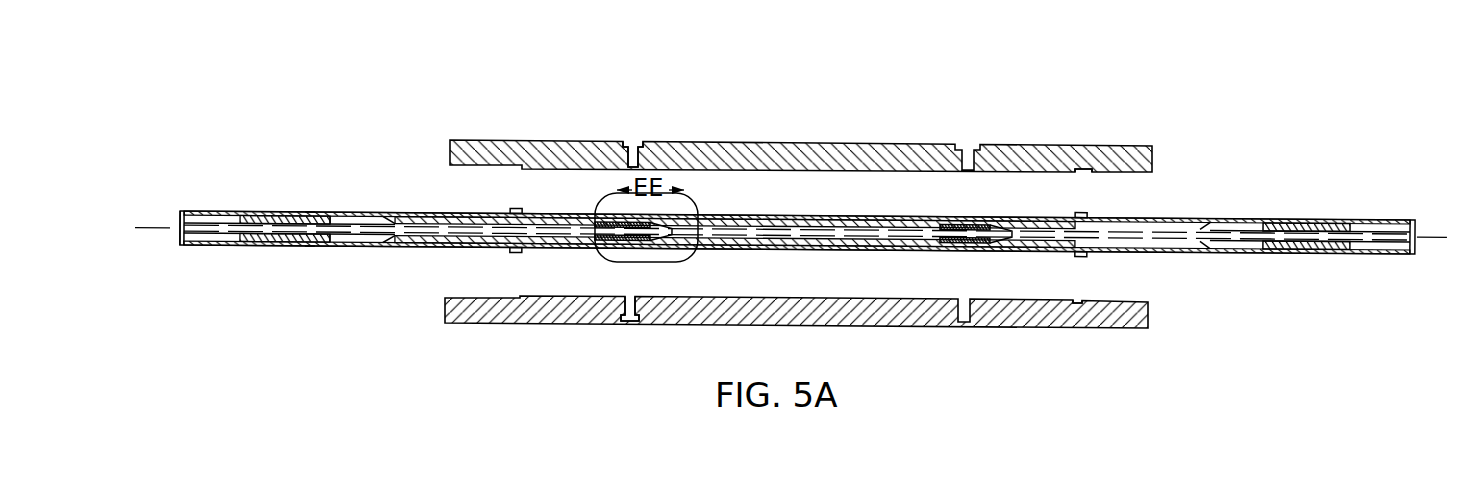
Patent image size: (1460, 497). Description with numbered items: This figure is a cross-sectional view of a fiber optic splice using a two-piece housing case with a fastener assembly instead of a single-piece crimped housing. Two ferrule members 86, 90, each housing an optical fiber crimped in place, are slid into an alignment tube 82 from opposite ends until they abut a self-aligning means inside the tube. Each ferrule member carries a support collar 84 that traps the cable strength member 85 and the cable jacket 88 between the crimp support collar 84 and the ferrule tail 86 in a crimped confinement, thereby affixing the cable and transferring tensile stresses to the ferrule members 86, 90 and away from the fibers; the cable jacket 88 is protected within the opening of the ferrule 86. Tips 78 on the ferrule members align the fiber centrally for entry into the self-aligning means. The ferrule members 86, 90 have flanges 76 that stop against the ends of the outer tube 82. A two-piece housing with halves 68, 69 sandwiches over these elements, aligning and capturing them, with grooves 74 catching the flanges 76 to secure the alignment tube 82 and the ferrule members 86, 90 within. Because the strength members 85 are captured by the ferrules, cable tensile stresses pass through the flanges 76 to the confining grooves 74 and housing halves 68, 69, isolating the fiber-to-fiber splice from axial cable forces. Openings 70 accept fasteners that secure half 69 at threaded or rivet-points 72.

The housing half 68 is at (775, 98).
The housing half 69 is at (769, 358).
The opening 70 is at (594, 94).
The threaded or rivet-point 72 is at (573, 348).
The groove 74 is at (1172, 219).
The flange 76 is at (1016, 341).
The tip 78 is at (1050, 148).
The alignment tube 82 is at (735, 148).
The support collar 84 is at (255, 158).
The strength member 85 is at (369, 156).
The ferrule member 86 is at (286, 152).
The cable jacket 88 is at (135, 179).
The ferrule member 90 is at (1265, 201).